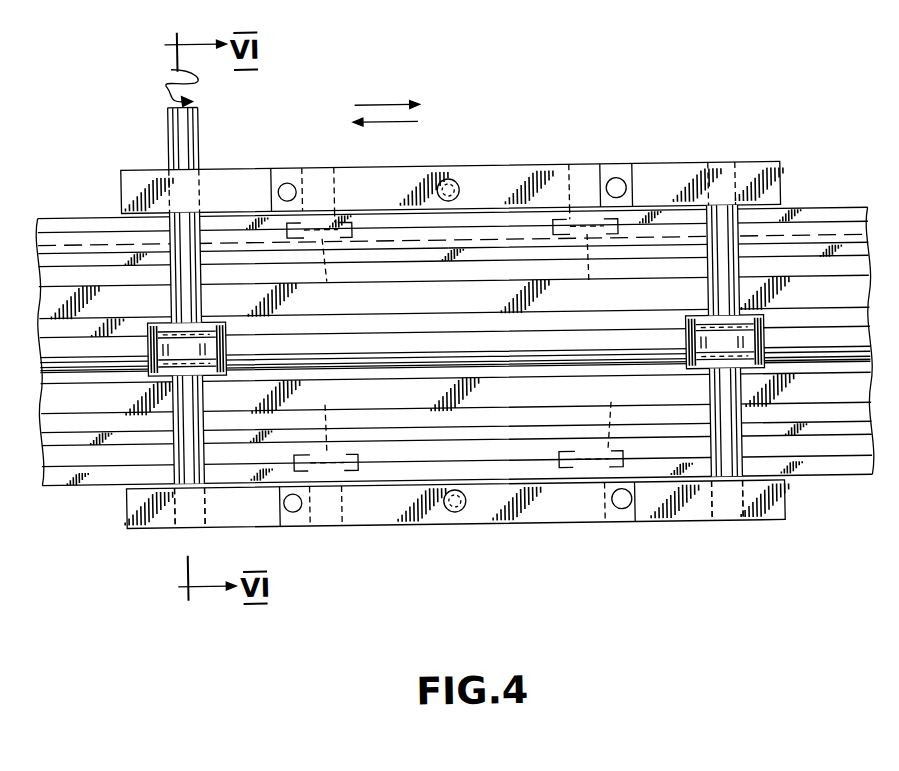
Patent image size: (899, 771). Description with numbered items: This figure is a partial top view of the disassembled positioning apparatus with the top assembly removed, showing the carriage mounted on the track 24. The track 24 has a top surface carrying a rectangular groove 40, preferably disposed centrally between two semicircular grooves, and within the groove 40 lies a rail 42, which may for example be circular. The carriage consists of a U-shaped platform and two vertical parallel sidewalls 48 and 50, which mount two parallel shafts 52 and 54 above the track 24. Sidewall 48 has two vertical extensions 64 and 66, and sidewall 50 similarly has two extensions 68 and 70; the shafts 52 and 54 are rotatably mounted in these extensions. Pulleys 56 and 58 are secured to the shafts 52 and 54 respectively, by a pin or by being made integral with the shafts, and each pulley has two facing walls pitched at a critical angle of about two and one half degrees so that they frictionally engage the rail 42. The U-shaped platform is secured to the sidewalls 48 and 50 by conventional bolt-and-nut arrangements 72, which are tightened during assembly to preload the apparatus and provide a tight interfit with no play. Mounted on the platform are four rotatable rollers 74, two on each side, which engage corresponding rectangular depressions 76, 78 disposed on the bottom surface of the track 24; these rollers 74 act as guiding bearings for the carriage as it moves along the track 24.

The track 24 is at (845, 400).
The rectangular groove 40 is at (830, 313).
The rail 42 is at (387, 343).
The vertical sidewall 48 is at (526, 511).
The vertical sidewall 50 is at (516, 184).
The shaft 52 is at (132, 246).
The shaft 54 is at (746, 266).
The pulley 56 is at (205, 343).
The pulley 58 is at (763, 332).
The vertical extension 64 is at (148, 506).
The vertical extension 66 is at (678, 506).
The extension 68 is at (163, 181).
The extension 70 is at (758, 182).
The bolt-and-nut arrangement 72 is at (458, 183).
The rotatable roller 74 is at (457, 339).
The rectangular depression 76 is at (824, 235).
The rectangular depression 78 is at (827, 465).